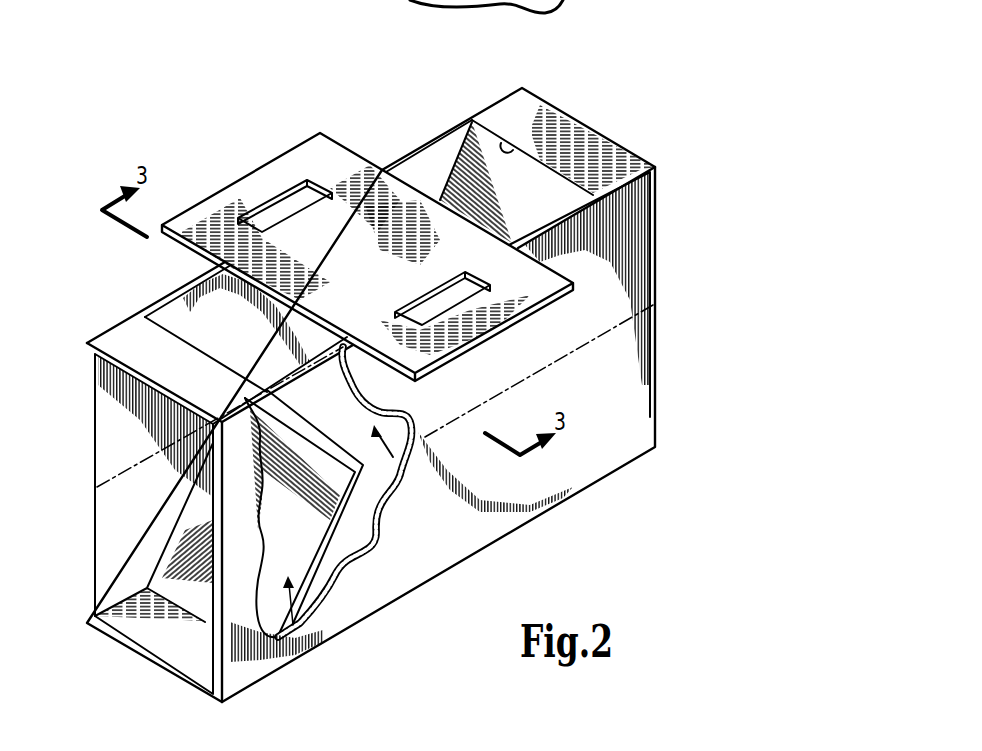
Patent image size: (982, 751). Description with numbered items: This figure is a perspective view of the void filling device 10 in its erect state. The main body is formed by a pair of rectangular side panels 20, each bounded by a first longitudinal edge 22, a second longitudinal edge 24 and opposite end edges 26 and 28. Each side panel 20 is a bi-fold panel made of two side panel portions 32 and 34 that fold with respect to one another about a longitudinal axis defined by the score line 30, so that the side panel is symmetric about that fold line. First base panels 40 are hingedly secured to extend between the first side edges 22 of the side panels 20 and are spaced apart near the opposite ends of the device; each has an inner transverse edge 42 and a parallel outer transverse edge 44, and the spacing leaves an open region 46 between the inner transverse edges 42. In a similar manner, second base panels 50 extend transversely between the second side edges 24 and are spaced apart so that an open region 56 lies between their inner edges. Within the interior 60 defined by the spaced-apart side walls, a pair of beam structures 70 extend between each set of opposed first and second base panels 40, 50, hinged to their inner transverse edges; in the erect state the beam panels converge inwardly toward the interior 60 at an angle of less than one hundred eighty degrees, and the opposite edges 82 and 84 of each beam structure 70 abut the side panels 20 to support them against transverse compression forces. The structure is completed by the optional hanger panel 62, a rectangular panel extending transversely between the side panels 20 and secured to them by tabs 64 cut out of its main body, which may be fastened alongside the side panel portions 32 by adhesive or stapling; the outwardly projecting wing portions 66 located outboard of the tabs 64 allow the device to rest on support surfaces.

The void filling device 10 is at (655, 63).
The side panels 20 is at (88, 427).
The first longitudinal edge 22 is at (570, 198).
The second longitudinal edge 24 is at (465, 558).
The end edge 26 is at (200, 620).
The end edge 28 is at (655, 276).
The score line 30 is at (502, 395).
The side panel portion 32 is at (634, 205).
The side panel portion 34 is at (630, 386).
The first base panels 40 is at (537, 147).
The inner transverse edge 42 is at (503, 140).
The outer transverse edge 44 is at (588, 140).
The open region 46 is at (207, 293).
The second base panels 50 is at (160, 643).
The open region 56 is at (330, 587).
The interior 60 is at (420, 466).
The hanger panel 62 is at (338, 268).
The tabs 64 is at (458, 296).
The wing portions 66 is at (598, 245).
The beam structures 70 is at (480, 166).
The edge of beam structure 82 is at (172, 338).
The edge of beam structure 84 is at (337, 515).